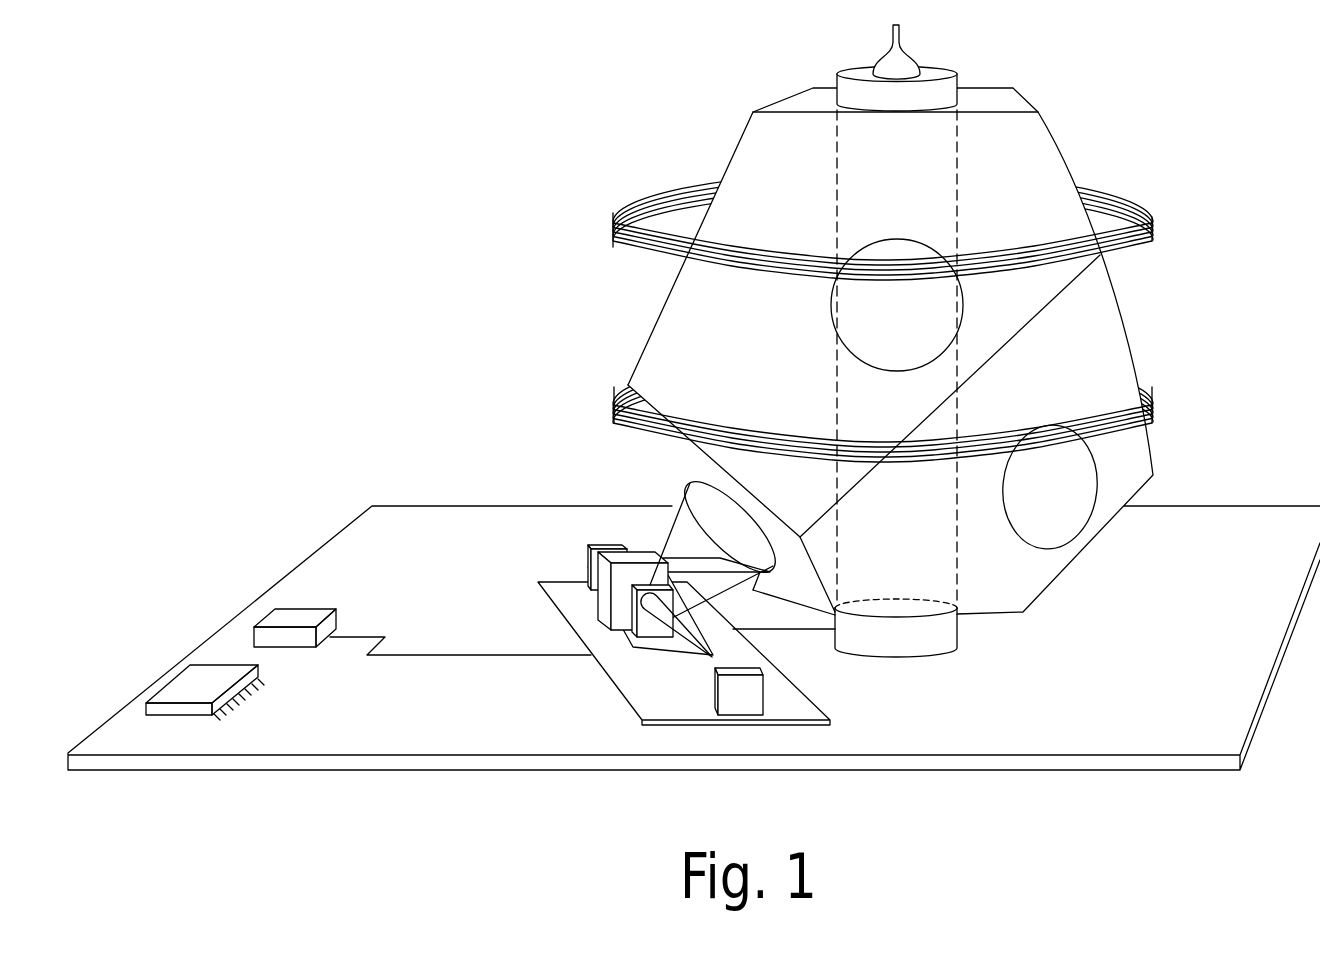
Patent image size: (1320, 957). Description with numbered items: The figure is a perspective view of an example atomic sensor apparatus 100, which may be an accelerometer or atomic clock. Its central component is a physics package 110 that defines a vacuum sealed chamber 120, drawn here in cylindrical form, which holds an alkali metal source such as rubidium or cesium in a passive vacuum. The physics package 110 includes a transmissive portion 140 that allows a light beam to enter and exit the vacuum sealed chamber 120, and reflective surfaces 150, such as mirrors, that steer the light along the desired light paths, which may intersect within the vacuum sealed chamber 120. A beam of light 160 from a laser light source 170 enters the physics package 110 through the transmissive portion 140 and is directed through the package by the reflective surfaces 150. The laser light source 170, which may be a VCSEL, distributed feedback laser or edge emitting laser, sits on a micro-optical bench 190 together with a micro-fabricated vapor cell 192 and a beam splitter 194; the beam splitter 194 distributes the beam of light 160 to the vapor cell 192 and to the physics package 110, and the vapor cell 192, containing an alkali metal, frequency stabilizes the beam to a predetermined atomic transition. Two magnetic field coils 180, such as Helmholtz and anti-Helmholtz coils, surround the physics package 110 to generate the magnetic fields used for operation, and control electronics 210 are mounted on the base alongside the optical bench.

The atomic sensor apparatus 100 is at (321, 172).
The physics package 110 is at (1045, 141).
The vacuum sealed chamber 120 is at (958, 420).
The transmissive portion 140 is at (700, 498).
The reflective surface 150 is at (955, 298).
The beam of light 160 is at (666, 533).
The laser light source 170 is at (743, 693).
The magnetic field coil 180 is at (1153, 230).
The micro-optical bench 190 is at (637, 703).
The micro-fabricated vapor cell 192 is at (605, 573).
The beam splitter 194 is at (650, 627).
The control electronics 210 is at (172, 693).